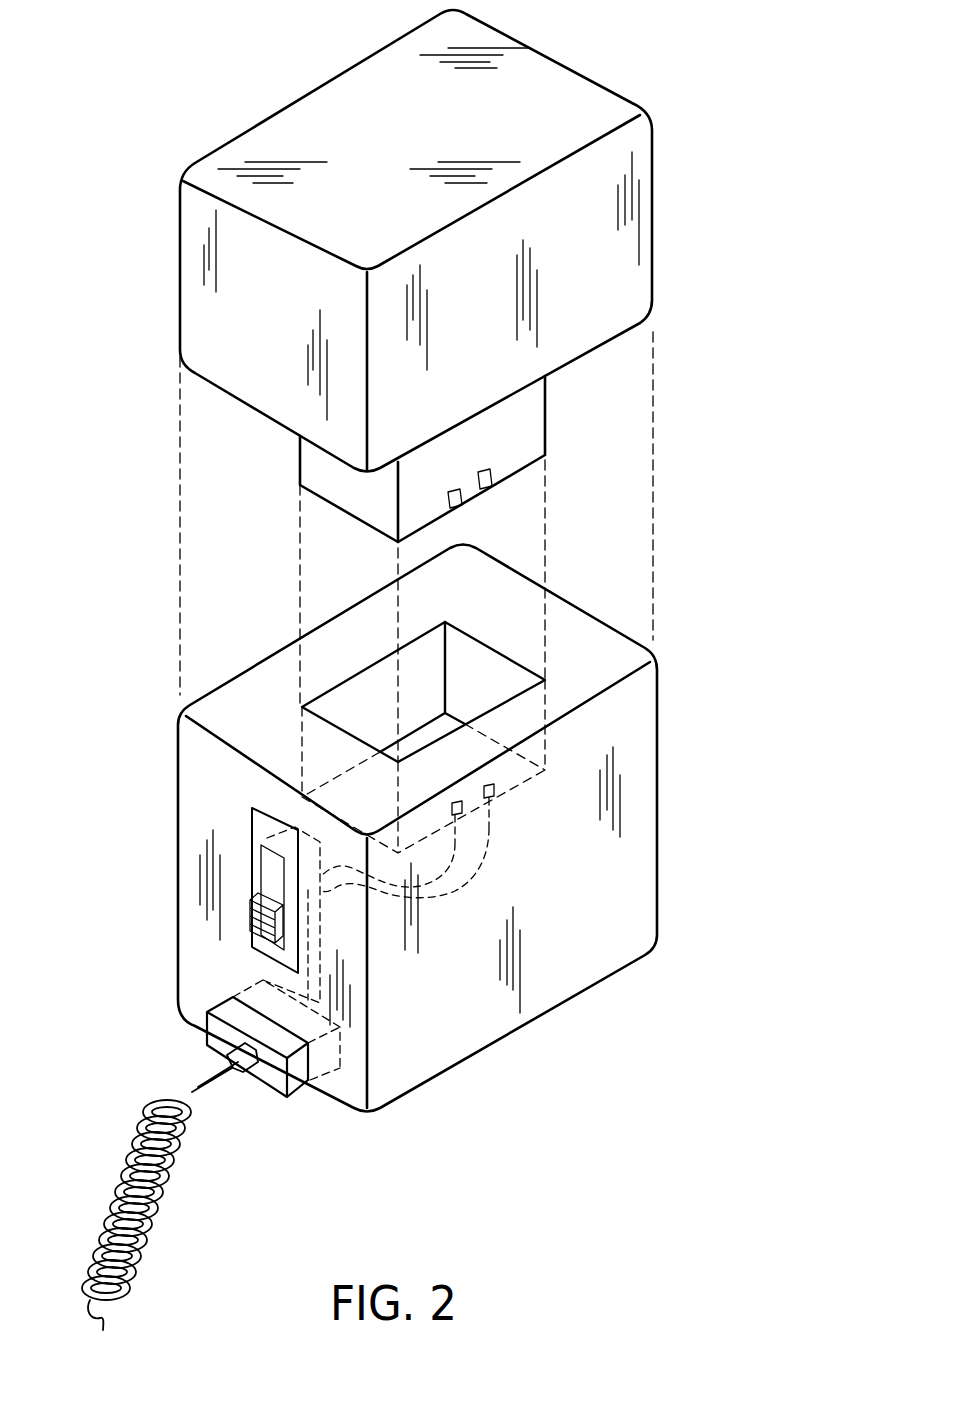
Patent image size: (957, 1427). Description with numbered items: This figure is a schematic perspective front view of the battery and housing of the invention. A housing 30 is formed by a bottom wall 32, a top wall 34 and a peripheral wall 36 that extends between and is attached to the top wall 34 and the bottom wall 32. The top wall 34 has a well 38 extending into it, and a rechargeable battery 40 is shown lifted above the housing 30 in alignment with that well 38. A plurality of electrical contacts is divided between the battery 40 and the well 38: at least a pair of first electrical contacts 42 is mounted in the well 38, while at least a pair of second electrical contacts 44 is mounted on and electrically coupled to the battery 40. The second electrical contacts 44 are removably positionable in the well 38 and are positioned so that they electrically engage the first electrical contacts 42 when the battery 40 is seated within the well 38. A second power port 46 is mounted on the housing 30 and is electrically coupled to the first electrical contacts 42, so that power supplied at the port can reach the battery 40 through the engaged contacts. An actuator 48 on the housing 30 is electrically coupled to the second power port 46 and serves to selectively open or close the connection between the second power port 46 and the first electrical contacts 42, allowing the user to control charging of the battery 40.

The housing 30 is at (657, 945).
The bottom wall 32 is at (577, 995).
The top wall 34 is at (560, 595).
The peripheral wall 36 is at (657, 712).
The well 38 is at (367, 667).
The rechargeable battery 40 is at (652, 140).
The first electrical contacts 42 is at (490, 800).
The second electrical contacts 44 is at (453, 508).
The second power port 46 is at (323, 1072).
The actuator 48 is at (250, 917).